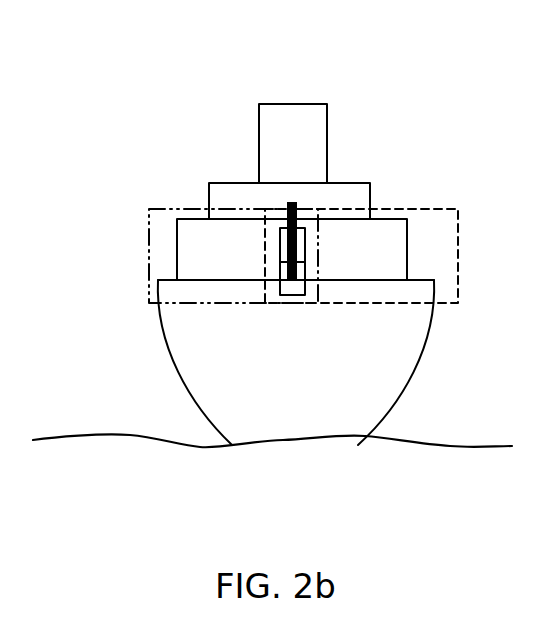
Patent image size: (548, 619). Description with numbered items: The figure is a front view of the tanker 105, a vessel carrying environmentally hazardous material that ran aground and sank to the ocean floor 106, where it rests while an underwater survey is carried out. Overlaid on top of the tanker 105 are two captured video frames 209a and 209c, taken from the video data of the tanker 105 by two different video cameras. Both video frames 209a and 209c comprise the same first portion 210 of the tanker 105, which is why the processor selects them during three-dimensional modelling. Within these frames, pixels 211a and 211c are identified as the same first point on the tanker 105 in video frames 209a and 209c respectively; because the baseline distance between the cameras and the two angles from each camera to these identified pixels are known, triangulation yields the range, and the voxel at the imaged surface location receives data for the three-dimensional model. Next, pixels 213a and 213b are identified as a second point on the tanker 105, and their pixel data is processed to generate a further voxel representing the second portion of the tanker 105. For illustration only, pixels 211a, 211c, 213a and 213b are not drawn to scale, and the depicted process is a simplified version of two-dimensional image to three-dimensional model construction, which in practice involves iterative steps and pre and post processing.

The tanker 105 is at (292, 100).
The ocean floor 106 is at (102, 432).
The video frame 209a is at (445, 200).
The video frame 209c is at (150, 198).
The first portion 210 is at (297, 303).
The pixel 211a is at (193, 383).
The pixel 211c is at (282, 292).
The pixel 213a is at (166, 252).
The pixel 213b is at (281, 246).